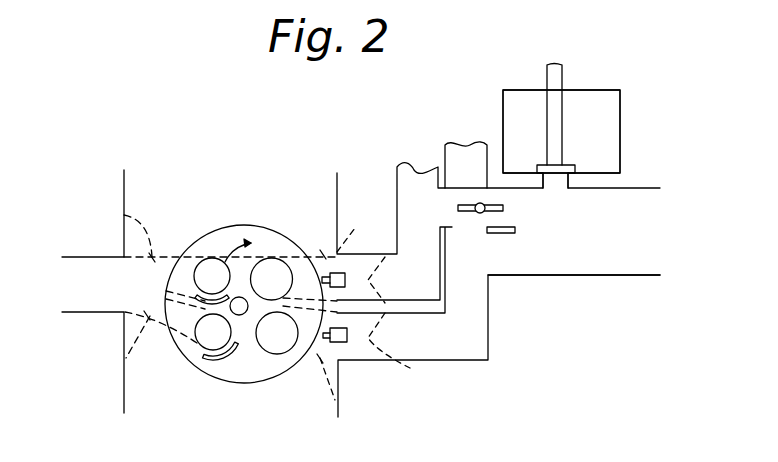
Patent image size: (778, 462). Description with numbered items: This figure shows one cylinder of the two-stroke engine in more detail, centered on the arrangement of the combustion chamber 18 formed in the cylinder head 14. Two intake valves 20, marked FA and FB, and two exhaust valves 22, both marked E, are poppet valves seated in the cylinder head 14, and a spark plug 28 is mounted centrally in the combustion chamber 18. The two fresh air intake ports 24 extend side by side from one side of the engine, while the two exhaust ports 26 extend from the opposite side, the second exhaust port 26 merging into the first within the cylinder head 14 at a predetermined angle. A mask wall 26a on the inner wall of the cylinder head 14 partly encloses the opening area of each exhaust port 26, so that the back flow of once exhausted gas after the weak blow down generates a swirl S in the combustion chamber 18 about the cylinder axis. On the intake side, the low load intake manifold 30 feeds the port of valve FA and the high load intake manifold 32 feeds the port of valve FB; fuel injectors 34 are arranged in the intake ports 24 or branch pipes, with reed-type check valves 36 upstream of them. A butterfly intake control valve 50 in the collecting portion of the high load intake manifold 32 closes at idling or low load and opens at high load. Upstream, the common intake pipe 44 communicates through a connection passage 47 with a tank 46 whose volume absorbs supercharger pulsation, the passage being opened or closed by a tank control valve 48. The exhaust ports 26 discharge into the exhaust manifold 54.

The cylinder head 14 is at (147, 181).
The combustion chamber 18 is at (253, 235).
The intake valves 20 is at (276, 258).
The exhaust valves 22 is at (212, 258).
The fresh air intake ports 24 is at (338, 408).
The exhaust ports 26 is at (124, 212).
The mask wall 26a is at (197, 352).
The spark plug 28 is at (240, 316).
The low load intake manifold 30 is at (468, 351).
The high load intake manifold 32 is at (450, 216).
The fuel injectors 34 is at (345, 287).
The check valves 36 is at (400, 325).
The common intake pipe 44 is at (603, 262).
The tank 46 is at (613, 120).
The connection passage 47 is at (555, 185).
The tank control valve 48 is at (575, 163).
The intake control valve 50 is at (503, 208).
The exhaust manifolds 54 is at (81, 302).
The swirl S is at (232, 253).